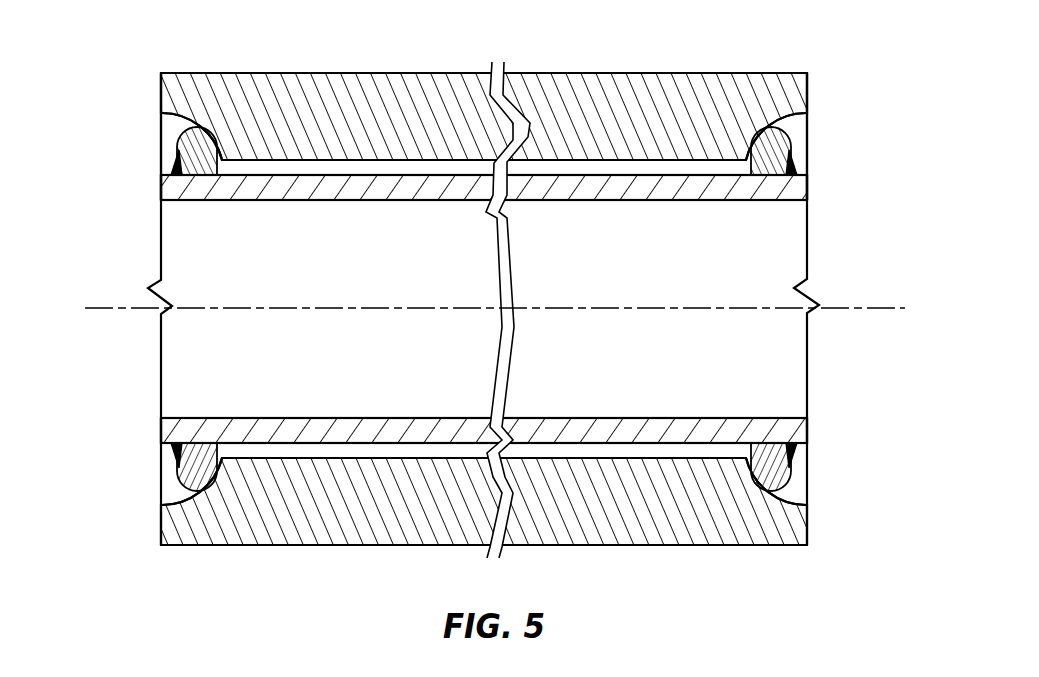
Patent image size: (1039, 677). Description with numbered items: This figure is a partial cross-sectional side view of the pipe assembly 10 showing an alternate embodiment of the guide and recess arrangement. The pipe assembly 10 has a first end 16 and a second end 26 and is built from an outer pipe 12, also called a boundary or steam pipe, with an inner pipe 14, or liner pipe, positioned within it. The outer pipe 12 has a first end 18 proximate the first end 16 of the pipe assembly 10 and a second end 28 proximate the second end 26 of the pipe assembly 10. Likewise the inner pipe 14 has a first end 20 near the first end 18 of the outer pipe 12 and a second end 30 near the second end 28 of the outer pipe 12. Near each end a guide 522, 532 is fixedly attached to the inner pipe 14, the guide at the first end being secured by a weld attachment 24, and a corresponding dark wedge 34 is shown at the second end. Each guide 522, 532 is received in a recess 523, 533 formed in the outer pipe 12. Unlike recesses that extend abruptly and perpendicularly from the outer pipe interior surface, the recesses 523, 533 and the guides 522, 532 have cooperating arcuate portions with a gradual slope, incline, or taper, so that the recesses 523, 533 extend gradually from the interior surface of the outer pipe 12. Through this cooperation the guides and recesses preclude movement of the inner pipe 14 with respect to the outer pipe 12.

The pipe assembly 10 is at (722, 39).
The outer pipe 12 is at (458, 126).
The inner pipe 14 is at (458, 198).
The first end of the pipe assembly 16 is at (880, 92).
The first end of the outer pipe 18 is at (808, 90).
The first end of the inner pipe 20 is at (809, 183).
The weld attachment 24 is at (793, 163).
The second end of the pipe assembly 26 is at (88, 92).
The second end of the outer pipe 28 is at (161, 88).
The second end of the inner pipe 30 is at (160, 183).
The first seal lip 34 is at (176, 160).
The guide 522 is at (765, 160).
The recess 523 is at (777, 94).
The guide 532 is at (203, 160).
The recess 533 is at (194, 93).